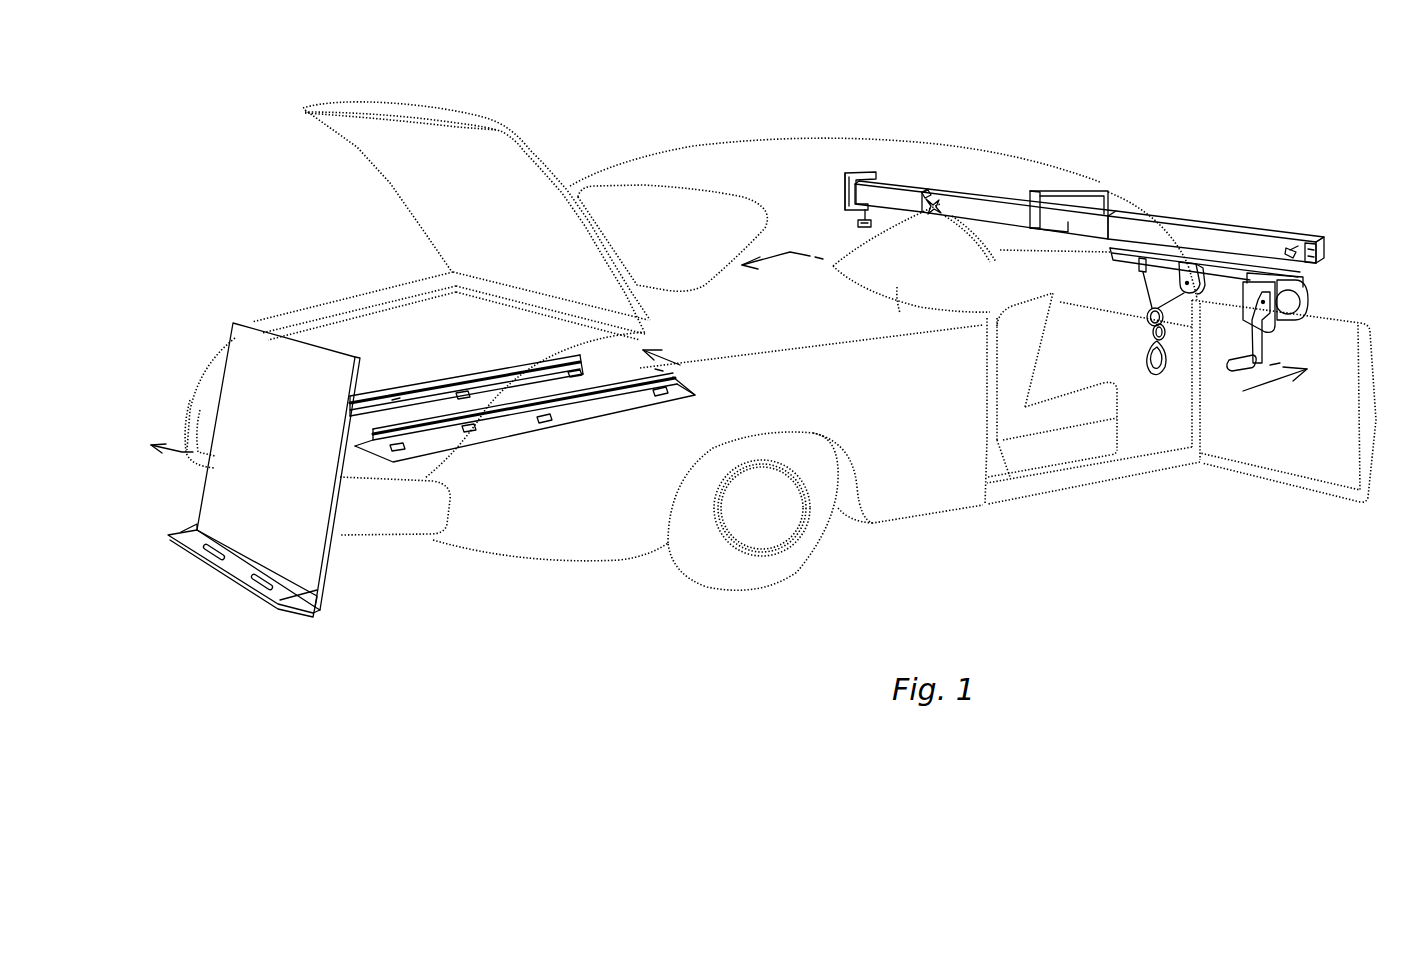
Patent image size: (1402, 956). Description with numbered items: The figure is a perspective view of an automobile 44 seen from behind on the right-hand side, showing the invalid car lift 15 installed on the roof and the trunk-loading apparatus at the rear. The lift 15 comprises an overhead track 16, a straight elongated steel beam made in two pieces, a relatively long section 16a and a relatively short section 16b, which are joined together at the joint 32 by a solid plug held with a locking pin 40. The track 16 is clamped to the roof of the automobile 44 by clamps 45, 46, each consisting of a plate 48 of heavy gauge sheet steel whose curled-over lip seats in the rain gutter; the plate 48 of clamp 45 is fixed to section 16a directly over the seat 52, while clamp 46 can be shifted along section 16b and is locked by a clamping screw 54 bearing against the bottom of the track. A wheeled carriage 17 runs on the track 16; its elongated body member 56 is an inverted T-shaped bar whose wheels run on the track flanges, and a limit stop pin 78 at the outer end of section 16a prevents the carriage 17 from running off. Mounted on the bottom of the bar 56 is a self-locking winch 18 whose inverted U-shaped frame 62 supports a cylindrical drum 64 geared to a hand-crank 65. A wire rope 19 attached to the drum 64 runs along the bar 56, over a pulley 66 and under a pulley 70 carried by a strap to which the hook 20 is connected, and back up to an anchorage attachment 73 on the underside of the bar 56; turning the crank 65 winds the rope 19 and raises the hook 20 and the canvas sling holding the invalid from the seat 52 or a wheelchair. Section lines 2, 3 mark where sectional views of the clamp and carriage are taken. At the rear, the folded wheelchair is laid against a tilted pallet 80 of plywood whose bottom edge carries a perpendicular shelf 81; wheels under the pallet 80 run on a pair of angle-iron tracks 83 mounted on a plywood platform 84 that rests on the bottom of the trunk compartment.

The invalid car lift 15 is at (1076, 237).
The overhead track 16 is at (1089, 205).
The long track section 16a is at (1160, 232).
The short track section 16b is at (900, 196).
The wheeled carriage 17 is at (1162, 268).
The winch 18 is at (1288, 307).
The wire rope 19 is at (1231, 275).
The hook 20 is at (1147, 363).
The joint 32 is at (930, 192).
The locking pin 40 is at (931, 210).
The automobile 44 is at (1056, 157).
The clamp 45 is at (1108, 185).
The clamp 46 is at (840, 176).
The plate 48 is at (836, 190).
The seat 52 is at (1040, 372).
The clamping screw 54 is at (852, 221).
The elongated body member 56 is at (1264, 262).
The inverted U-shaped frame 62 is at (1251, 302).
The cylindrical drum 64 is at (1288, 310).
The hand-crank 65 is at (1252, 341).
The pulley 66 is at (1181, 300).
The pulley 70 is at (1146, 316).
The anchorage attachment 73 is at (1135, 268).
The limit stop pin 78 is at (1300, 243).
The pallet 80 is at (264, 470).
The shelf 81 is at (230, 567).
The tracks 83 is at (465, 426).
The platform 84 is at (503, 430).
The section line 2- 2 is at (1022, 333).
The section line 3- 3 is at (413, 384).